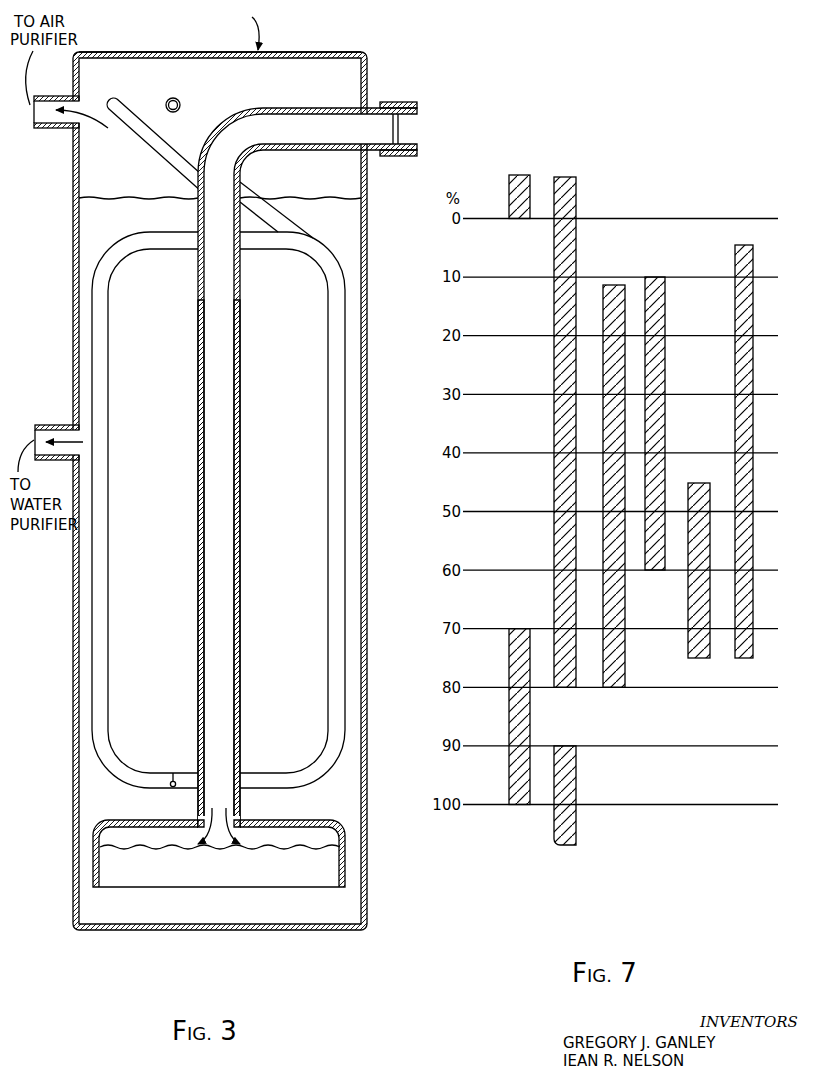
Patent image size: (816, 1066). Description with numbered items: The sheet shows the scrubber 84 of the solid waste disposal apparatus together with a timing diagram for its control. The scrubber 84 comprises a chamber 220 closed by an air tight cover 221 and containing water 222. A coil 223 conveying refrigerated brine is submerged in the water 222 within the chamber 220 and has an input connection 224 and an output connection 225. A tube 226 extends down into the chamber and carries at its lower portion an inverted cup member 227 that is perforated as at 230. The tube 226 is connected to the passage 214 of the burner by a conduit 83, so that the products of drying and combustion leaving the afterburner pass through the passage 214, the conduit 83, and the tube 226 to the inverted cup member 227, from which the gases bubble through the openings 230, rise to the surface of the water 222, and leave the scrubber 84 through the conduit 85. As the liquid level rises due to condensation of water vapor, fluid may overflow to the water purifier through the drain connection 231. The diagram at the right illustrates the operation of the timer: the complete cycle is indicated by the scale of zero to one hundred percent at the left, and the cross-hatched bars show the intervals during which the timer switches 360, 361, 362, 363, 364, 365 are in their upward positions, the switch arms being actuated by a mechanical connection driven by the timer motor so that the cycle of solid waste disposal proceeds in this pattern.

In FIG. 3, the conduit 83 is at (385, 106).
In FIG. 3, the scrubber 84 is at (243, 30).
In FIG. 3, the conduit 85 is at (64, 127).
In FIG. 3, the passage 214 is at (417, 123).
In FIG. 3, the chamber 220 is at (363, 492).
In FIG. 3, the air tight cover 221 is at (302, 52).
In FIG. 3, the water 222 is at (302, 474).
In FIG. 3, the coil 223 is at (301, 250).
In FIG. 3, the input connection 224 is at (113, 100).
In FIG. 3, the output connection 225 is at (181, 103).
In FIG. 3, the tube 226 is at (200, 460).
In FIG. 3, the inverted cup member 227 is at (341, 817).
In FIG. 3, the perforations 230 is at (185, 820).
In FIG. 3, the drain connection 231 is at (53, 425).
In FIG. 7, the timer switch 360 is at (570, 529).
In FIG. 7, the timer switch 361 is at (523, 528).
In FIG. 7, the timer switch 362 is at (622, 583).
In FIG. 7, the timer switch 363 is at (669, 579).
In FIG. 7, the timer switch 364 is at (712, 682).
In FIG. 7, the timer switch 365 is at (756, 563).